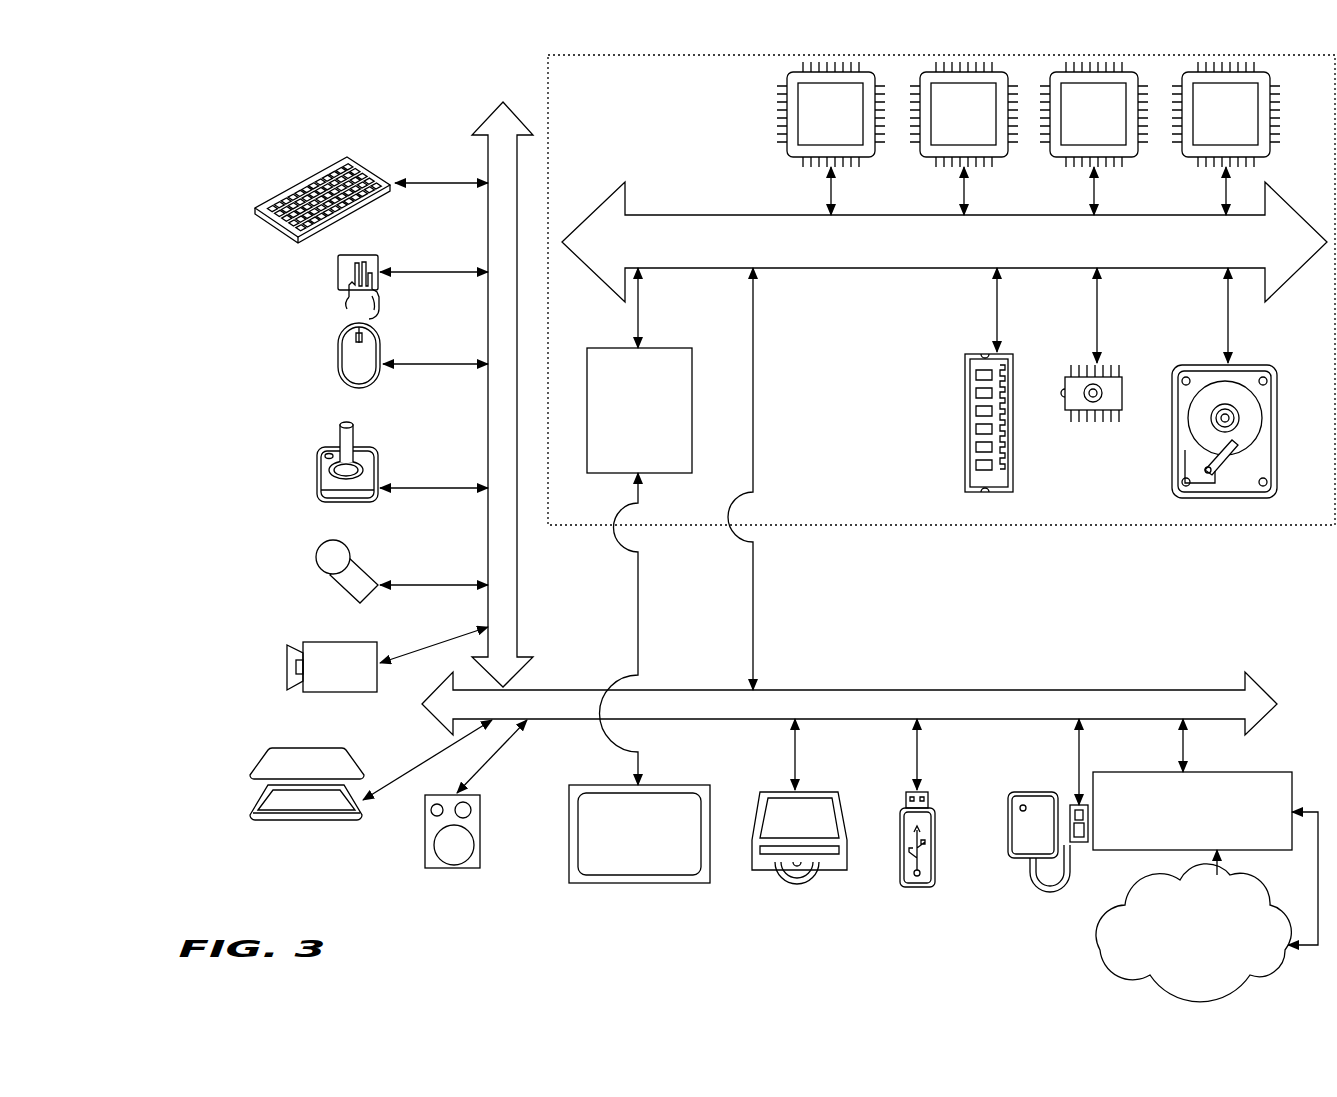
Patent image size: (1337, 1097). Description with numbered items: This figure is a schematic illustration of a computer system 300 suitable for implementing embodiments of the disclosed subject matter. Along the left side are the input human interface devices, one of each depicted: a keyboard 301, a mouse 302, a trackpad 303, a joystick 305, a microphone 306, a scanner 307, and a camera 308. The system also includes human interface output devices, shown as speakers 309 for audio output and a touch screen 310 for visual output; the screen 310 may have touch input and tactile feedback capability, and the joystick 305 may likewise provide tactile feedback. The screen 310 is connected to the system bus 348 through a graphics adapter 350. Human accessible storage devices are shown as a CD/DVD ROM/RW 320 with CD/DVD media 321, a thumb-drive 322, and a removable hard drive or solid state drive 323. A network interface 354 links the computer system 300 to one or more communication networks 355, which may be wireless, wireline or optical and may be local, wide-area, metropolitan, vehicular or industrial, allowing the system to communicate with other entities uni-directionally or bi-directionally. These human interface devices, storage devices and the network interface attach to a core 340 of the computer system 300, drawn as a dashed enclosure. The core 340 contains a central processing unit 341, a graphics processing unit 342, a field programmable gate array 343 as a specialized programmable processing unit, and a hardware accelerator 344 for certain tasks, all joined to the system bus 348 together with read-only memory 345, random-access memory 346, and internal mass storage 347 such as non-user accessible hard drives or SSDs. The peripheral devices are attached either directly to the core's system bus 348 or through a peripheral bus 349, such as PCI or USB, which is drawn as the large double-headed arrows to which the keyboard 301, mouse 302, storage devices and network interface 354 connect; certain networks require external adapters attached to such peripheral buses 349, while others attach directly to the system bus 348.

The computer system 300 is at (258, 122).
The keyboard 301 is at (255, 207).
The mouse 302 is at (338, 355).
The trackpad 303 is at (338, 278).
The joystick 305 is at (317, 487).
The microphone 306 is at (316, 555).
The scanner 307 is at (250, 805).
The camera 308 is at (287, 665).
The speakers 309 is at (452, 868).
The touch screen 310 is at (636, 885).
The CD/DVD ROM/RW 320 is at (838, 870).
The CD/DVD media 321 is at (780, 886).
The thumb-drive 322 is at (920, 887).
The removable hard drive or solid state drive 323 is at (1020, 860).
The core 340 is at (935, 527).
The central processing unit 341 is at (831, 138).
The graphics processing unit 342 is at (964, 138).
The field programmable gate array 343 is at (1094, 138).
The hardware accelerator 344 is at (1226, 138).
The read-only memory 345 is at (1087, 422).
The random-access memory 346 is at (965, 450).
The internal mass storage 347 is at (1185, 365).
The system bus 348 is at (944, 242).
The peripheral bus 349 is at (488, 140).
The graphics adapter 350 is at (639, 370).
The network interface 354 is at (1192, 784).
The communication networks 355 is at (1093, 950).